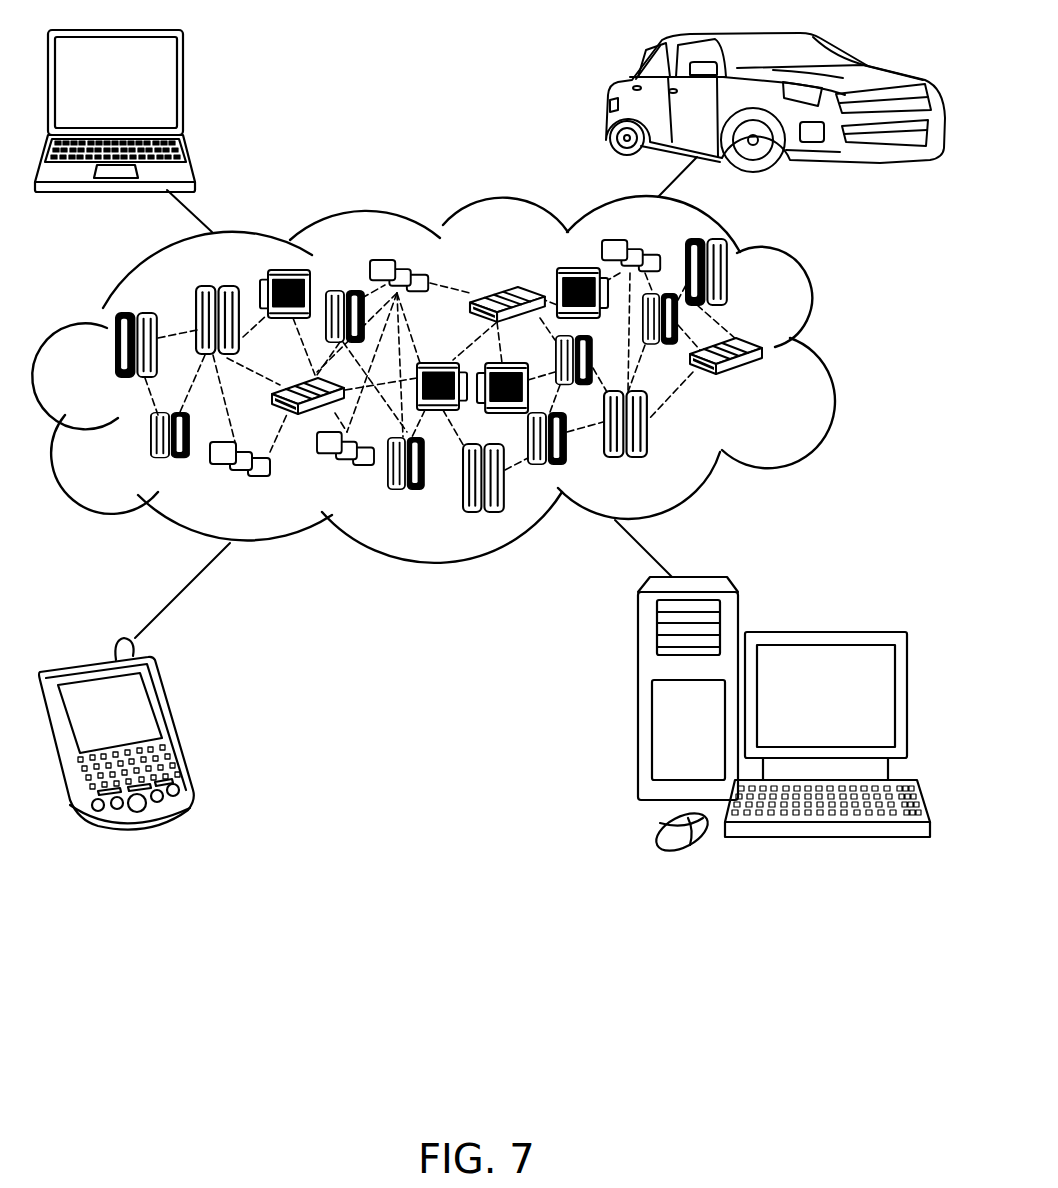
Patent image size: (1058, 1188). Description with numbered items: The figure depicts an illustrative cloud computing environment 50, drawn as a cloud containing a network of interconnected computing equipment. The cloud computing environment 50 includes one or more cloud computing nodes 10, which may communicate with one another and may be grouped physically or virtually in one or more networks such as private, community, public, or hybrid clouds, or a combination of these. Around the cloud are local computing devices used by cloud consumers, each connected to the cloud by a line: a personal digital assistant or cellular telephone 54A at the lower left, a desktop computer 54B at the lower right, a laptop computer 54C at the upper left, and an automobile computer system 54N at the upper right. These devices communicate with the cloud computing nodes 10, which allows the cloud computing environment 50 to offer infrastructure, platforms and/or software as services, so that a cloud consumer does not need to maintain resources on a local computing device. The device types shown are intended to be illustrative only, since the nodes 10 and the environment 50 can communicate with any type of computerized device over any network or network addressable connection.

The laptop computer 54C is at (183, 90).
The automobile computer system 54N is at (612, 105).
The cloud computing environment 50 is at (823, 353).
The cloud computing nodes 10 is at (770, 384).
The personal digital assistant (PDA) or cellular telephone 54A is at (172, 723).
The desktop computer 54B is at (820, 632).